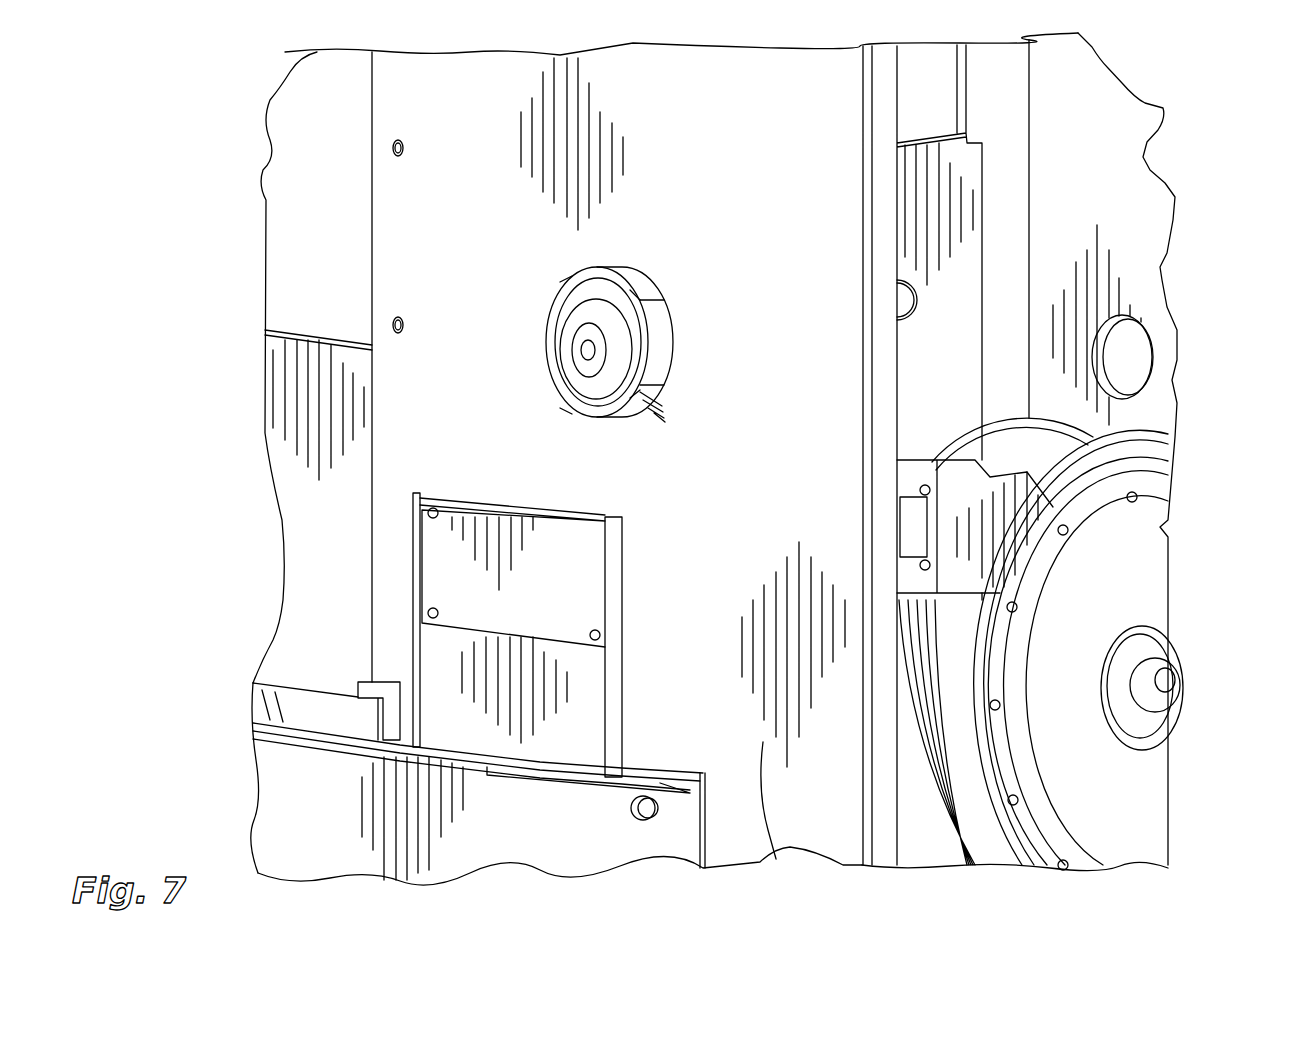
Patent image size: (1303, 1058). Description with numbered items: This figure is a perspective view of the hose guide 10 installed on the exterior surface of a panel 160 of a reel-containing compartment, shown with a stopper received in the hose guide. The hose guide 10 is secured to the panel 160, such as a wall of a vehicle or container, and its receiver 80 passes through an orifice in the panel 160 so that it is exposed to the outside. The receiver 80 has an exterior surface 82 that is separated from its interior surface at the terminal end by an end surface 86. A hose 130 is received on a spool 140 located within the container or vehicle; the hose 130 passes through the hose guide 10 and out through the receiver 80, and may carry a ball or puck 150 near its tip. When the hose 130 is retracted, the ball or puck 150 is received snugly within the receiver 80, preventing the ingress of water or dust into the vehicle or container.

The hose guide 10 is at (595, 342).
The receiver 80 is at (540, 365).
The exterior surface 82 is at (657, 340).
The end surface 86 is at (638, 400).
The ball or puck 150 is at (583, 380).
The hose 130 is at (917, 643).
The spool 140 is at (960, 743).
The panel 160 is at (772, 855).